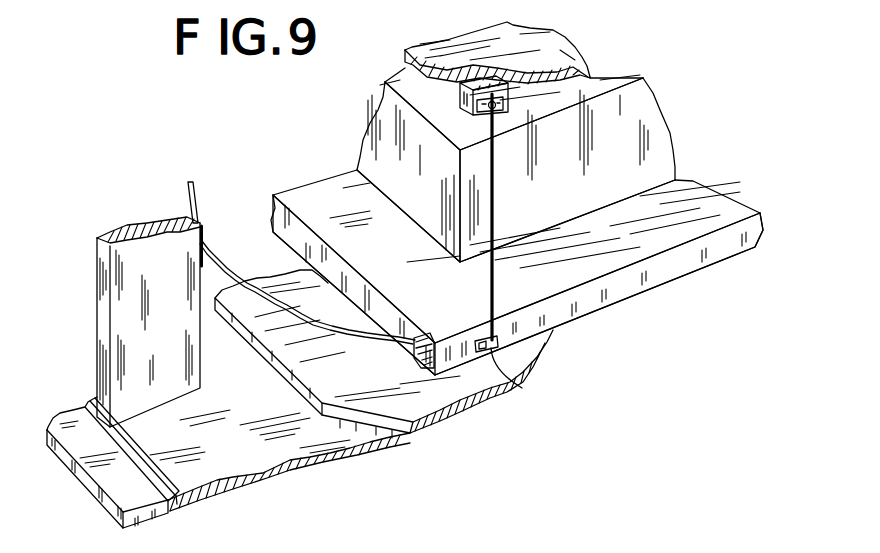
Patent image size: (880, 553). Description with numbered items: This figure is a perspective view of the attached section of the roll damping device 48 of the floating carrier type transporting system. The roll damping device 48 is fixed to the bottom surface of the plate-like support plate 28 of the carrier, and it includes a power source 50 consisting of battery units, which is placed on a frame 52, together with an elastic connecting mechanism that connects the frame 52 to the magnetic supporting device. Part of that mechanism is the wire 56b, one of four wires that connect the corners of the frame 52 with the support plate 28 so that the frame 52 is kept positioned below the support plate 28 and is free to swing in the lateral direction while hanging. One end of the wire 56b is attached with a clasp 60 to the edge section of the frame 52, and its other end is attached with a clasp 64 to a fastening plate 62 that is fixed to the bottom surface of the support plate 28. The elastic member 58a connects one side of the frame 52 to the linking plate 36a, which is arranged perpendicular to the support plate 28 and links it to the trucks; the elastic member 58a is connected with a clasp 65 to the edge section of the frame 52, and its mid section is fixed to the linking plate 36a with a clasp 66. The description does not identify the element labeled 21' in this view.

The base plate 21' is at (300, 433).
The support plate 28 is at (562, 52).
The linking plate 36a is at (118, 343).
The roll damping device 48 is at (352, 167).
The power source 50 is at (655, 137).
The frame 52 is at (633, 285).
The wire 56b is at (494, 190).
The elastic member 58a is at (257, 307).
The clasp 60 is at (518, 384).
The fastening plate 62 is at (462, 112).
The clasp 64 is at (510, 97).
The clasp 65 is at (424, 337).
The clasp 66 is at (205, 247).